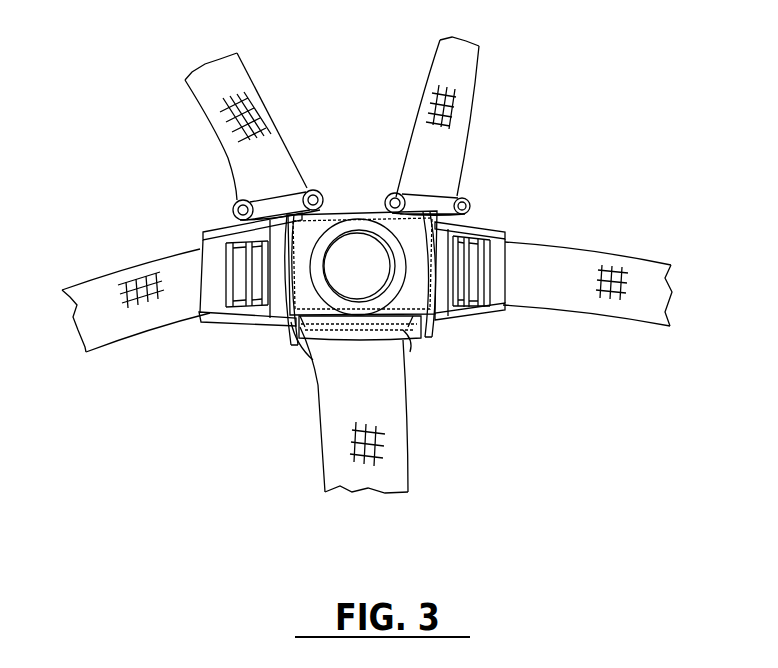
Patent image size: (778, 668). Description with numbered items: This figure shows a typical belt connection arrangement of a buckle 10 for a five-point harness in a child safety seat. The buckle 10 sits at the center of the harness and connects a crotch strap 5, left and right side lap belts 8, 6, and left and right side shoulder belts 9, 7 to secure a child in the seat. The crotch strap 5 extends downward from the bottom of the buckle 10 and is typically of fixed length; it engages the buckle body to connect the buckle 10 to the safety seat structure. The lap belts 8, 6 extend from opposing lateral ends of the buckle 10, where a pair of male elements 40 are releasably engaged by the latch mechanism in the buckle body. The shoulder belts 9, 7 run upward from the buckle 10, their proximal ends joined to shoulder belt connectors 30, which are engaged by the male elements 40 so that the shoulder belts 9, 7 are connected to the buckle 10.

The crotch strap 5 is at (408, 473).
The right side lap belt 6 is at (627, 263).
The right side shoulder belt 7 is at (478, 52).
The left side lap belt 8 is at (100, 273).
The left side shoulder belt 9 is at (236, 70).
The buckle 10 is at (460, 343).
The shoulder belt connector 30 is at (230, 212).
The male element 40 is at (220, 333).